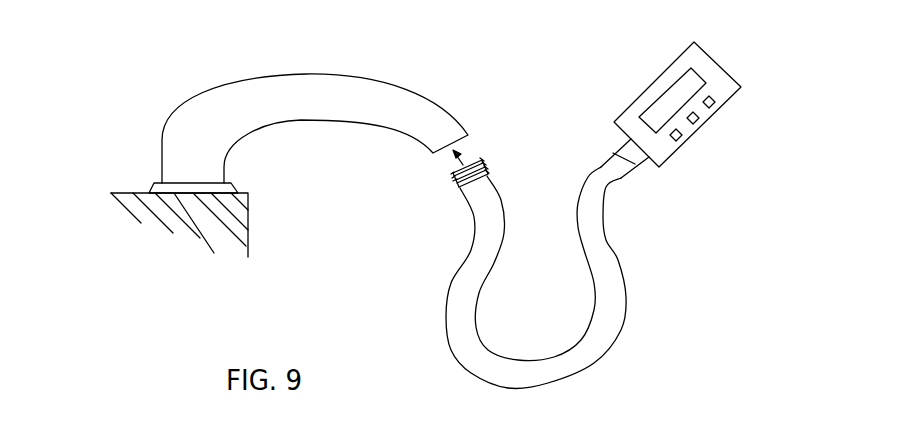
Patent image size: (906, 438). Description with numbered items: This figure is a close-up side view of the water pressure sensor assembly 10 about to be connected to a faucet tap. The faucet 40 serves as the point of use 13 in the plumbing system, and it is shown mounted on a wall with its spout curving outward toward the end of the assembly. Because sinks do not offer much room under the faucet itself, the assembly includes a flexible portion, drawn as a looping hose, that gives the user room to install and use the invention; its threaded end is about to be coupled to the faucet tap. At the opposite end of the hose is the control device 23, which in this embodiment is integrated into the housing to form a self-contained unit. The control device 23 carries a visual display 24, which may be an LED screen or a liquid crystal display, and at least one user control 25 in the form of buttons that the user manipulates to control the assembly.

The water pressure sensor assembly 10 is at (604, 198).
The point of use 13 is at (308, 124).
The faucet 40 is at (382, 90).
The control device 23 is at (688, 95).
The visual display 24 is at (688, 80).
The user control 25 is at (677, 139).